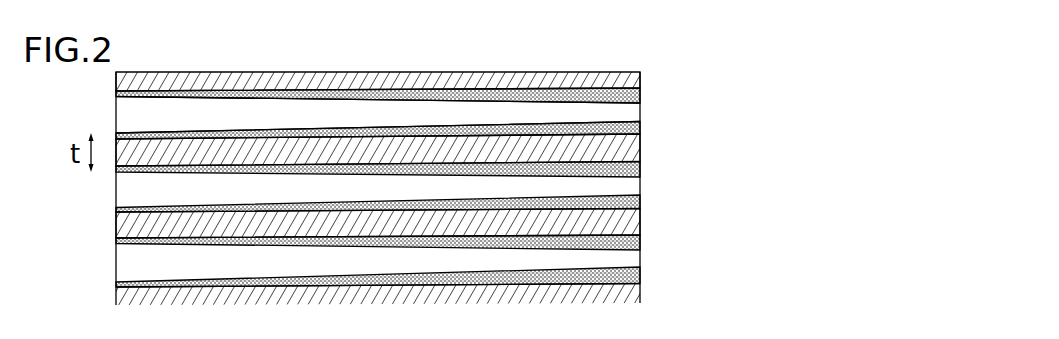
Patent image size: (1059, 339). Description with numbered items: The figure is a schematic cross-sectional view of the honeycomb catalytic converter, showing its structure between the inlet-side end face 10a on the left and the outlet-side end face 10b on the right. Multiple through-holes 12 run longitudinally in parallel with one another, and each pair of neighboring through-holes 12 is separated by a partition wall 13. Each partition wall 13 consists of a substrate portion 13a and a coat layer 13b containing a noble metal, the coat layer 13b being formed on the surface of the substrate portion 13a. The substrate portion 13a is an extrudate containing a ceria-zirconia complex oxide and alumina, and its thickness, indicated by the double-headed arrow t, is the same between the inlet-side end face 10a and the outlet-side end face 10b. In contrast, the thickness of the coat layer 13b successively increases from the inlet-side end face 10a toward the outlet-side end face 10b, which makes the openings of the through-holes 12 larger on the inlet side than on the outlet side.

The inlet-side end face 10a is at (112, 232).
The outlet-side end face 10b is at (647, 230).
The through-hole 12 is at (137, 111).
The partition wall 13 is at (443, 145).
The substrate portion 13a is at (636, 151).
The coat layer 13b is at (640, 127).